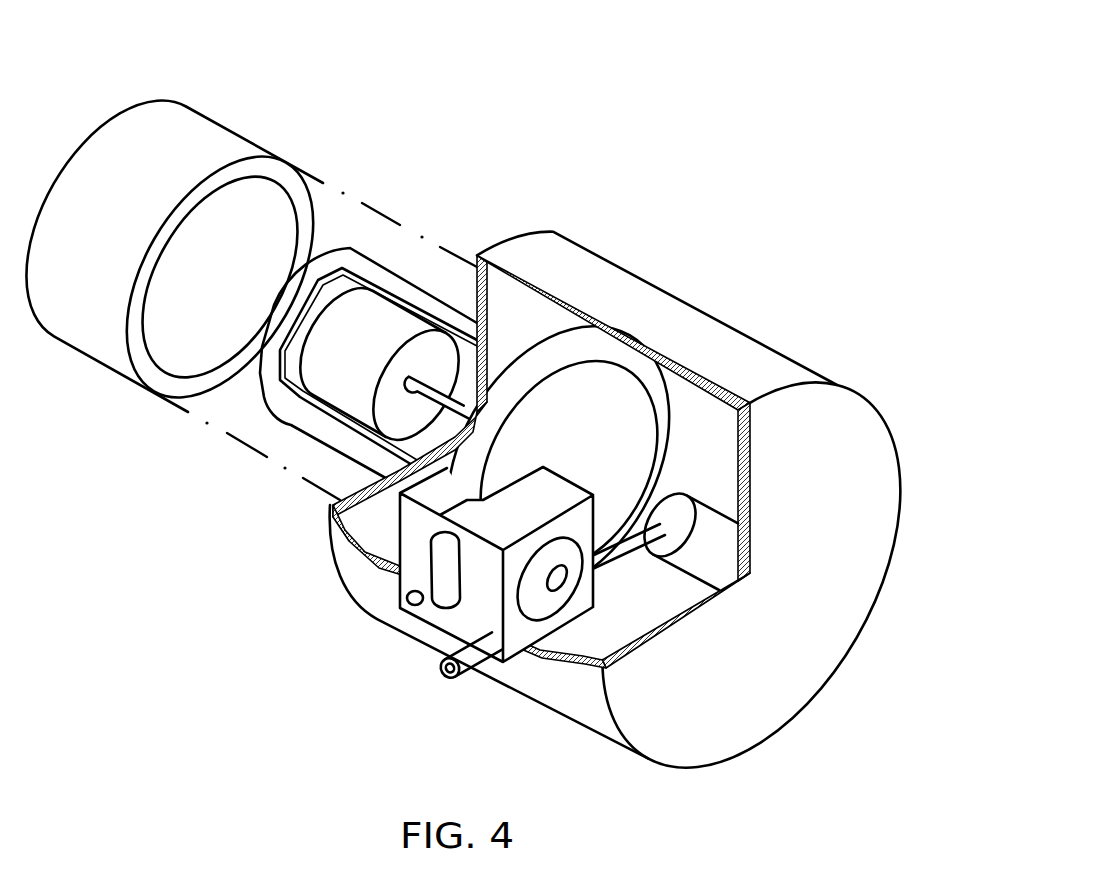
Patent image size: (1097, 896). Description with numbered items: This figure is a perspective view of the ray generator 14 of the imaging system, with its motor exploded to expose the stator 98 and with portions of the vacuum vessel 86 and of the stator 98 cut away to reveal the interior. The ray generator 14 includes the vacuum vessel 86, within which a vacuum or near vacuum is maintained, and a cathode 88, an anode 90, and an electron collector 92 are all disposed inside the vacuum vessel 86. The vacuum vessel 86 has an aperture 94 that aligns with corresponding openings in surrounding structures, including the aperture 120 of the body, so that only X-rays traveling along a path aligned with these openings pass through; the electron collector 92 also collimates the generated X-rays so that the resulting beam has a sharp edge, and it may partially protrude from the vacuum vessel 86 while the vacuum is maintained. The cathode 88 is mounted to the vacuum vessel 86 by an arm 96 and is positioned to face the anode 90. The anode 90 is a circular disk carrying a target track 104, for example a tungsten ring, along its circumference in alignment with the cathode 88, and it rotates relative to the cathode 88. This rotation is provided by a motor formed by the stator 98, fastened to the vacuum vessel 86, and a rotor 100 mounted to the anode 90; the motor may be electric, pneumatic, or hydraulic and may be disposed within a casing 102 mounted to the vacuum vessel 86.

The ray generator 14 is at (684, 62).
The vacuum vessel 86 is at (625, 500).
The cathode 88 is at (474, 604).
The anode 90 is at (600, 390).
The electron collector 92 is at (497, 660).
The aperture 94 is at (420, 560).
The arm 96 is at (610, 567).
The stator 98 is at (300, 412).
The rotor 100 is at (377, 313).
The casing 102 is at (137, 120).
The target track 104 is at (562, 440).
The aperture 120 is at (438, 607).